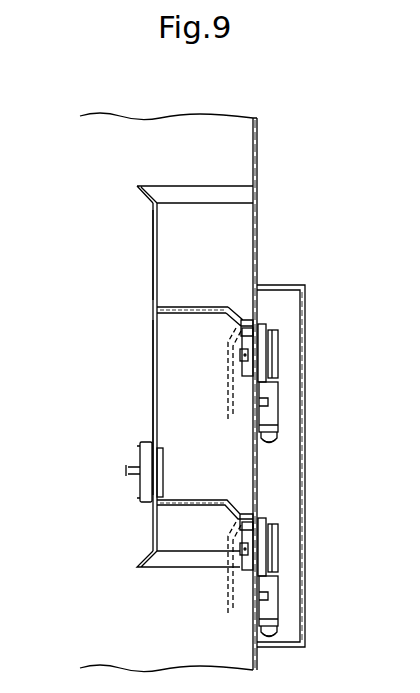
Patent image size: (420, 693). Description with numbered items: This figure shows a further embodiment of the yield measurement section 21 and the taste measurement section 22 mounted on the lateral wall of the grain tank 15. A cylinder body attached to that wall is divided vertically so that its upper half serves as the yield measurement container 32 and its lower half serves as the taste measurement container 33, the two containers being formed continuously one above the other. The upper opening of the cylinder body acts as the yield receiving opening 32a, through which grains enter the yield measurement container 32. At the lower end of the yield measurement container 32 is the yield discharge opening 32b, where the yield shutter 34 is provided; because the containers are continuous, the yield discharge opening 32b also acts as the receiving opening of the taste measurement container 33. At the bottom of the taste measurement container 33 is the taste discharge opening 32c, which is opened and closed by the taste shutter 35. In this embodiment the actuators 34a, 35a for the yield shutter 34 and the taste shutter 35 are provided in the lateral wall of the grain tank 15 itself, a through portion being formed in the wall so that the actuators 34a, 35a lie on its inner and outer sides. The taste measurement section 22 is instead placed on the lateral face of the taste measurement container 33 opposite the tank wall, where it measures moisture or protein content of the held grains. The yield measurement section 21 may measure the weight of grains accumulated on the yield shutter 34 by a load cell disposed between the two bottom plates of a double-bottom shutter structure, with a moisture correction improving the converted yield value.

The grain tank 15 is at (258, 132).
The yield measurement section 21 is at (192, 304).
The taste measurement section 22 is at (163, 470).
The yield measurement container 32 is at (176, 242).
The yield receiving opening 32a is at (177, 189).
The yield discharge opening 32b is at (195, 323).
The taste discharge opening 32c is at (182, 564).
The taste measurement container 33 is at (179, 413).
The yield shutter 34 is at (180, 309).
The actuator 34a is at (273, 407).
The taste shutter 35 is at (172, 505).
The actuator 35a is at (273, 603).